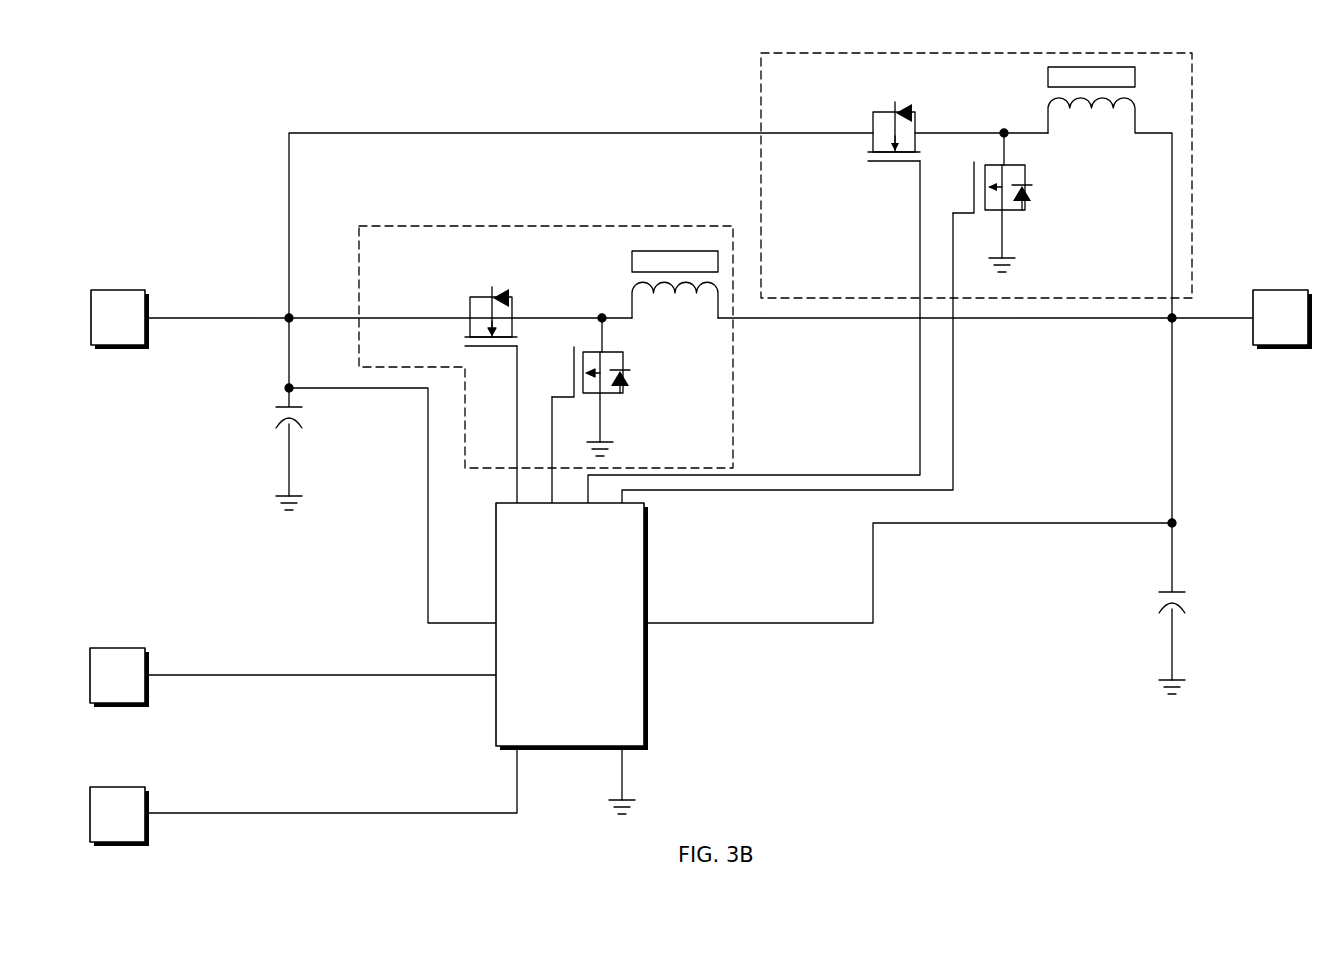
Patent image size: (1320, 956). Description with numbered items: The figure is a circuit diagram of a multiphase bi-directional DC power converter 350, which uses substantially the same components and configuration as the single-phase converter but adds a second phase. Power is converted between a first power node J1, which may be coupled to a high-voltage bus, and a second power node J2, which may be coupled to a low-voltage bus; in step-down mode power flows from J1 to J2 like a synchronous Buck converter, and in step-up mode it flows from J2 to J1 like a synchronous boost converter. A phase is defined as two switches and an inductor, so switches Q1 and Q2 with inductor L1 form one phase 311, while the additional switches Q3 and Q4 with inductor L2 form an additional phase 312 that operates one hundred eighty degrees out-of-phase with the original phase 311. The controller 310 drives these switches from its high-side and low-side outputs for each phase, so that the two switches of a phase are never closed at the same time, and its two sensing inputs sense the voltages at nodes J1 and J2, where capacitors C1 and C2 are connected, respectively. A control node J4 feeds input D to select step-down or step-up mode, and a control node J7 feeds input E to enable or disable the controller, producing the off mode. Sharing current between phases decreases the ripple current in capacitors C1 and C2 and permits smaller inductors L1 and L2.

The multiphase bi-directional power converter 350 is at (185, 98).
The phase 311 is at (502, 226).
The additional phase 312 is at (760, 68).
The controller 310 is at (572, 626).
The switch Q1 is at (471, 300).
The switch Q2 is at (606, 352).
The switch Q3 is at (874, 116).
The switch Q4 is at (1012, 165).
The inductor L1 is at (632, 262).
The inductor L2 is at (1048, 80).
The capacitor C1 is at (283, 407).
The capacitor C2 is at (1166, 592).
The first power node J1 is at (120, 319).
The second power node J2 is at (1282, 319).
The control node J7 is at (119, 677).
The control node J4 is at (119, 816).